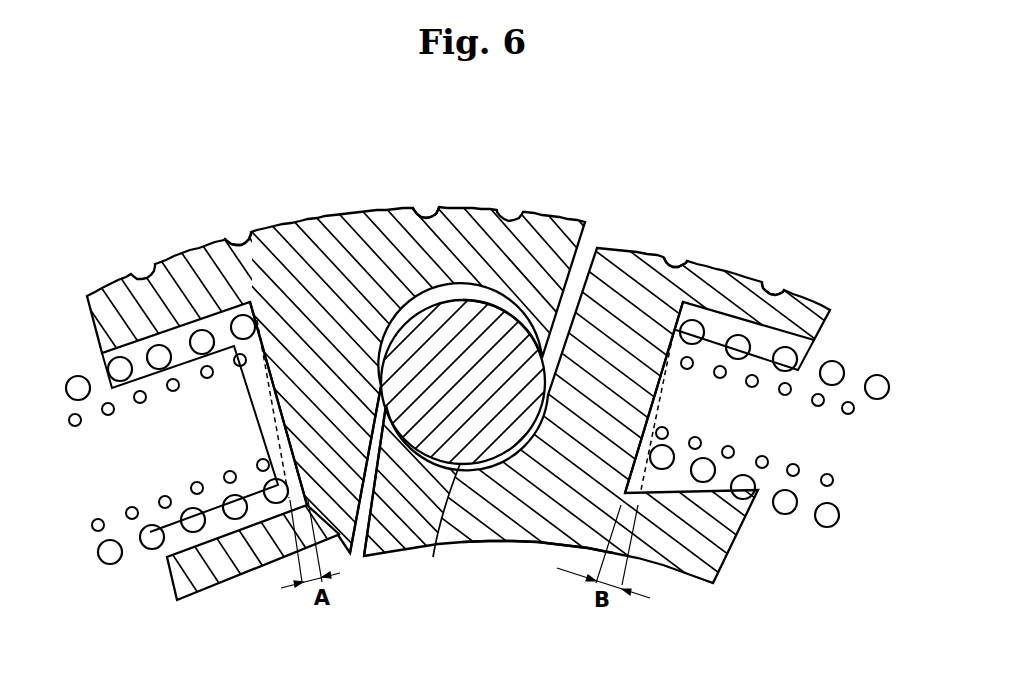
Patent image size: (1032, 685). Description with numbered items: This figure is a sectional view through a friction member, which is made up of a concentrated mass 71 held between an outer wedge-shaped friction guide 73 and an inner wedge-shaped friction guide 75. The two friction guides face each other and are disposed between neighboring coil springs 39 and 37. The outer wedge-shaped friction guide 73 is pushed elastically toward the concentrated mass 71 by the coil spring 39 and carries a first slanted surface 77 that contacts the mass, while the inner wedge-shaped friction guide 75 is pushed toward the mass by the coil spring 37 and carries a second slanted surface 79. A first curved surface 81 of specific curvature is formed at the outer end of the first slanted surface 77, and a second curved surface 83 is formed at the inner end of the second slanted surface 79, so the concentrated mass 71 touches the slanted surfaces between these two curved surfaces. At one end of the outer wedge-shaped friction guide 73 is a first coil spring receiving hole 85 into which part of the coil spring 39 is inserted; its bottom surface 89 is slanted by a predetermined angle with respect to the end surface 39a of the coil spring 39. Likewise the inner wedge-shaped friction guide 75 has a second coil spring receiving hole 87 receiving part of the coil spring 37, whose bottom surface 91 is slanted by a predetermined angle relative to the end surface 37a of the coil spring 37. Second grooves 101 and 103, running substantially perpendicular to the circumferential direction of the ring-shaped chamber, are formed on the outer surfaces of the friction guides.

The outer wedge-shaped friction guide 73 is at (280, 253).
The second slanted surface 79 is at (589, 262).
The second groove 101 is at (330, 212).
The second groove 103 is at (674, 262).
The concentrated mass 71 is at (462, 298).
The first curved surface 81 is at (528, 325).
The first slanted surface 77 is at (362, 553).
The second curved surface 83 is at (433, 557).
The inner wedge-shaped friction guide 75 is at (533, 547).
The bottom surface 89 is at (274, 385).
The end surface 39a is at (275, 433).
The first coil spring receiving hole 85 is at (146, 458).
The coil spring 39 is at (71, 377).
The second coil spring receiving hole 87 is at (734, 436).
The coil spring 37 is at (878, 376).
The end surface 37a is at (665, 379).
The bottom surface 91 is at (659, 410).